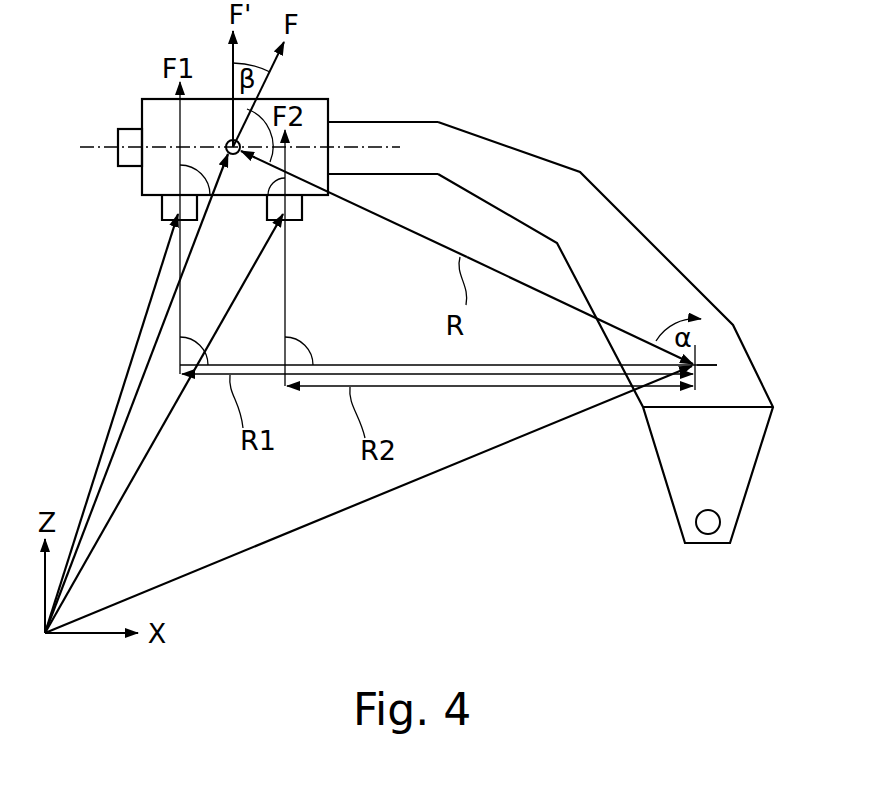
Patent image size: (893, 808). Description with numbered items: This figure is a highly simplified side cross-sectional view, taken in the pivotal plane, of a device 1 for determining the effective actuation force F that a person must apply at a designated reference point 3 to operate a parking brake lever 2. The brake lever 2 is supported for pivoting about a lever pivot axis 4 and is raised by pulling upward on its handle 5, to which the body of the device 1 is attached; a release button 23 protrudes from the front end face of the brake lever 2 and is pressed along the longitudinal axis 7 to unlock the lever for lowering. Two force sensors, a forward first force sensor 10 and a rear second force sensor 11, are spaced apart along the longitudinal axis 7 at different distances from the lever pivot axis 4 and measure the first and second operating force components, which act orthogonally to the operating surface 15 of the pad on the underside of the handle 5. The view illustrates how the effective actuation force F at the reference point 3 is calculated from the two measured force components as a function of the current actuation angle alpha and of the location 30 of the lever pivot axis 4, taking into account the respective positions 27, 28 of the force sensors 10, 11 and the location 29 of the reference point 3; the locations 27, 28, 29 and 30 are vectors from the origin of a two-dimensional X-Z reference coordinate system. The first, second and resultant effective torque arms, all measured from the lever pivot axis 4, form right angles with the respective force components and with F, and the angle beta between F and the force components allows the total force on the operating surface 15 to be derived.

The device 1 is at (122, 80).
The brake lever 2 is at (613, 228).
The reference point 3 is at (227, 147).
The lever pivot axis 4 is at (697, 357).
The handle 5 is at (353, 107).
The longitudinal axis 7 is at (382, 147).
The first force sensor 10 is at (163, 203).
The second force sensor 11 is at (293, 208).
The operating surface 15 is at (252, 198).
The release button 23 is at (127, 155).
The position of the first force sensor 27 is at (128, 365).
The position of the second force sensor 28 is at (143, 460).
The location of the reference point 29 is at (117, 442).
The location of the lever pivot axis 30 is at (345, 511).